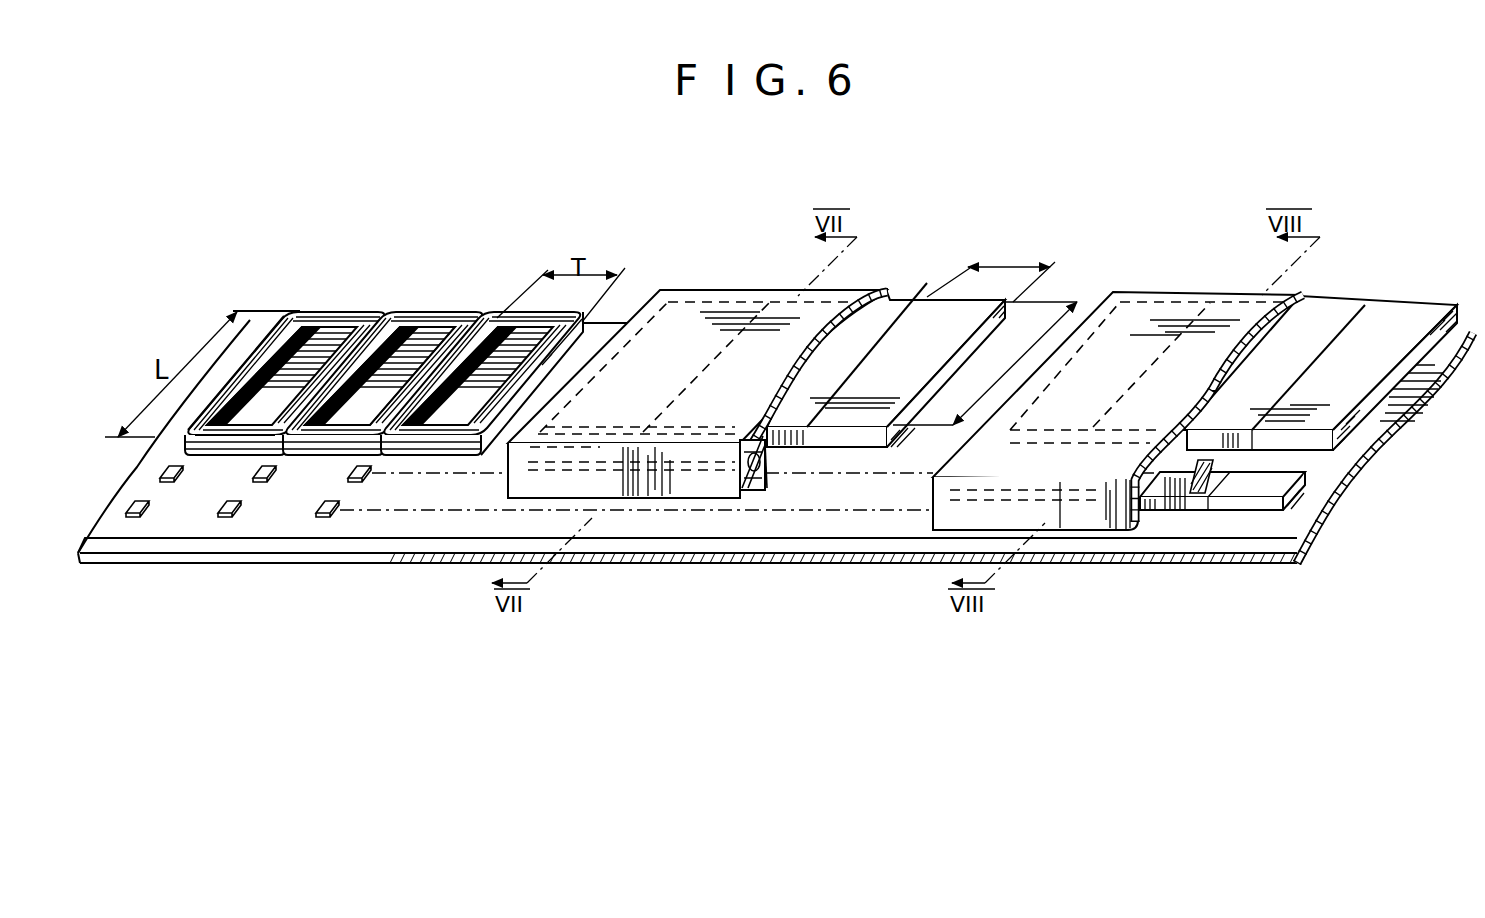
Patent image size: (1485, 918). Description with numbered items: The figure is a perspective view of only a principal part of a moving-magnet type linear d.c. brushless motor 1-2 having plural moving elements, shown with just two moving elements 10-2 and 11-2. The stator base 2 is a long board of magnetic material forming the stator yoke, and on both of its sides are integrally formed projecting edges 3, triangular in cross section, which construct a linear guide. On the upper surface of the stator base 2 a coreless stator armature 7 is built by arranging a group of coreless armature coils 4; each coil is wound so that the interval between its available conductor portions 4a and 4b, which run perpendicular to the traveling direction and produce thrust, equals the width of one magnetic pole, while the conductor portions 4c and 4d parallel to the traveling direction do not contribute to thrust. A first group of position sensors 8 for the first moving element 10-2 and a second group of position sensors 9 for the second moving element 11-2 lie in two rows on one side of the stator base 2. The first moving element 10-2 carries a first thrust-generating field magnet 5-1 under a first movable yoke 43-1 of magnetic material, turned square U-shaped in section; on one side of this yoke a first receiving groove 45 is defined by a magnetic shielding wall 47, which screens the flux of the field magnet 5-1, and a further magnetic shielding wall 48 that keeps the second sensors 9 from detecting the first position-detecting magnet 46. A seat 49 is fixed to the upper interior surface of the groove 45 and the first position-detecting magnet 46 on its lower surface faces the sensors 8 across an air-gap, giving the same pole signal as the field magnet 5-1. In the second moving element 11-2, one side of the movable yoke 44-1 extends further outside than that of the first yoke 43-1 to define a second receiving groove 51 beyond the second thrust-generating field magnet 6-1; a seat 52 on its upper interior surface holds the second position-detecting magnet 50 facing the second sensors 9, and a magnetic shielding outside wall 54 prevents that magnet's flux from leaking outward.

The moving-magnet type linear d.c. brushless motor 1-2 is at (982, 392).
The stator base 2 is at (899, 530).
The projecting edges 3 is at (1275, 553).
The coreless armature coil 4 is at (440, 304).
The available conductor portion 4a is at (247, 367).
The available conductor portion 4b is at (313, 410).
The conductor portion 4c is at (350, 315).
The conductor portion 4d is at (223, 442).
The first thrust-generating field magnet 5-1 is at (932, 298).
The second thrust-generating field magnet 6-1 is at (1342, 316).
The stator armature 7 is at (320, 298).
The first group of position sensors 8 is at (160, 473).
The second group of position sensors 9 is at (131, 517).
The first moving element 10-2 is at (732, 288).
The second moving element 11-2 is at (1297, 294).
The first movable yoke 43-1 is at (675, 290).
The movable yoke 44-1 is at (1150, 292).
The first receiving groove 45 is at (738, 484).
The first position-detecting magnet 46 is at (753, 478).
The magnetic shielding wall 47 is at (767, 458).
The magnetic shielding wall 48 is at (748, 490).
The seat 49 is at (758, 466).
The second position-detecting magnet 50 is at (1232, 484).
The second receiving groove 51 is at (1120, 535).
The seat 52 is at (1165, 470).
The magnetic shielding outside wall 54 is at (1084, 522).